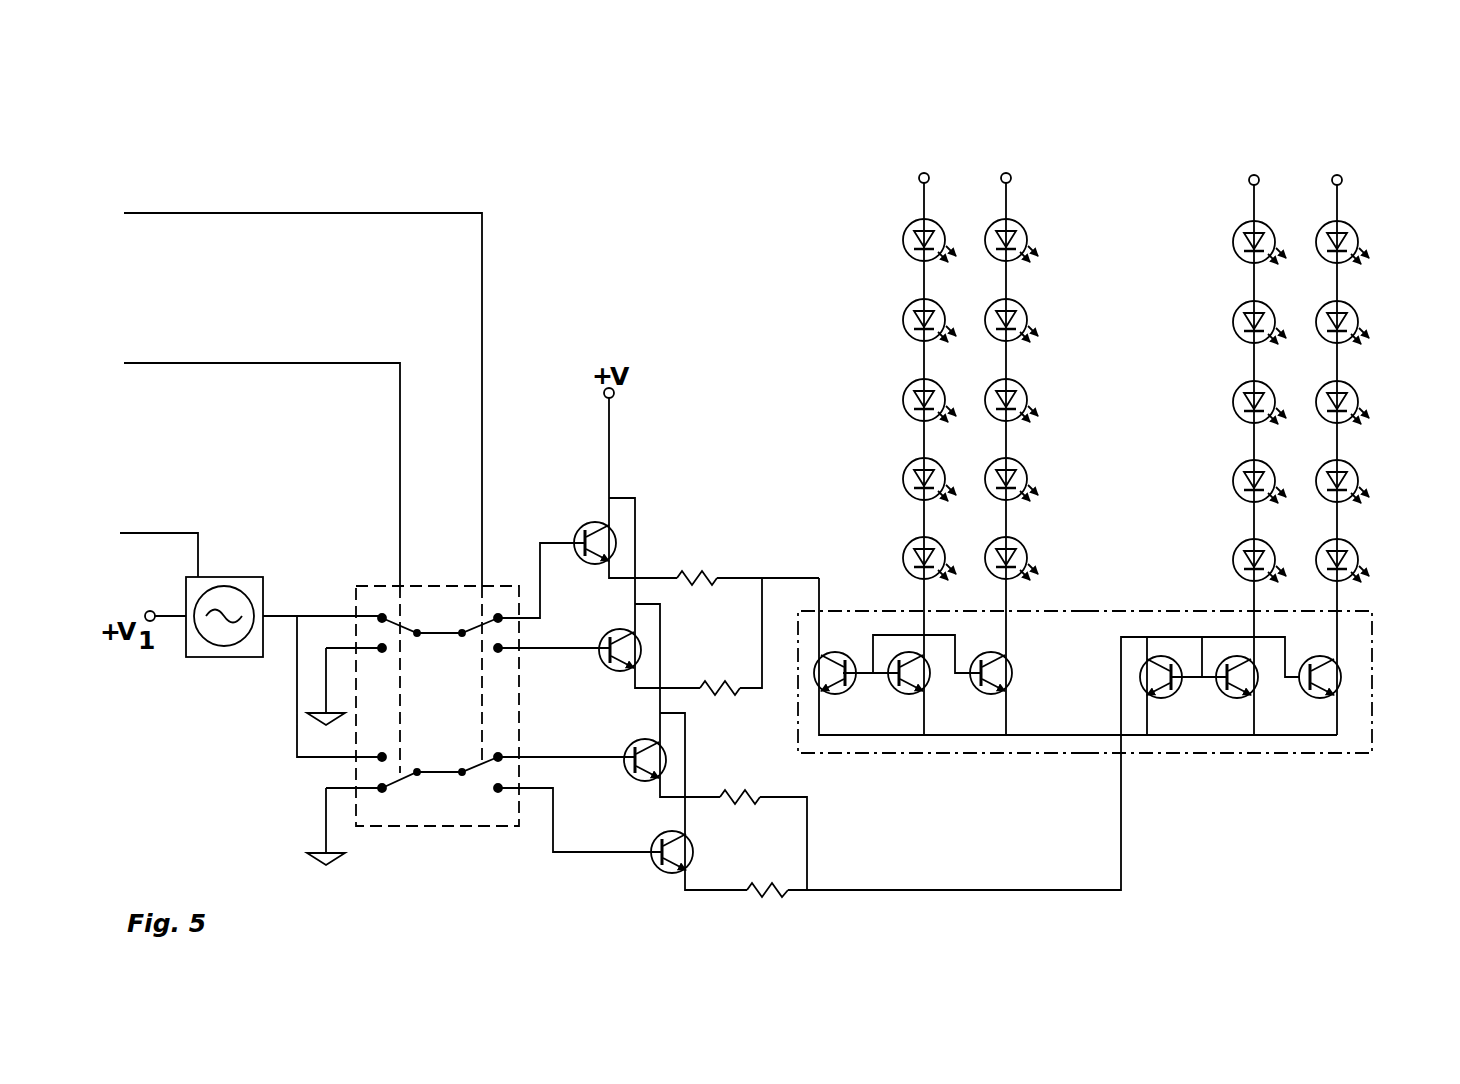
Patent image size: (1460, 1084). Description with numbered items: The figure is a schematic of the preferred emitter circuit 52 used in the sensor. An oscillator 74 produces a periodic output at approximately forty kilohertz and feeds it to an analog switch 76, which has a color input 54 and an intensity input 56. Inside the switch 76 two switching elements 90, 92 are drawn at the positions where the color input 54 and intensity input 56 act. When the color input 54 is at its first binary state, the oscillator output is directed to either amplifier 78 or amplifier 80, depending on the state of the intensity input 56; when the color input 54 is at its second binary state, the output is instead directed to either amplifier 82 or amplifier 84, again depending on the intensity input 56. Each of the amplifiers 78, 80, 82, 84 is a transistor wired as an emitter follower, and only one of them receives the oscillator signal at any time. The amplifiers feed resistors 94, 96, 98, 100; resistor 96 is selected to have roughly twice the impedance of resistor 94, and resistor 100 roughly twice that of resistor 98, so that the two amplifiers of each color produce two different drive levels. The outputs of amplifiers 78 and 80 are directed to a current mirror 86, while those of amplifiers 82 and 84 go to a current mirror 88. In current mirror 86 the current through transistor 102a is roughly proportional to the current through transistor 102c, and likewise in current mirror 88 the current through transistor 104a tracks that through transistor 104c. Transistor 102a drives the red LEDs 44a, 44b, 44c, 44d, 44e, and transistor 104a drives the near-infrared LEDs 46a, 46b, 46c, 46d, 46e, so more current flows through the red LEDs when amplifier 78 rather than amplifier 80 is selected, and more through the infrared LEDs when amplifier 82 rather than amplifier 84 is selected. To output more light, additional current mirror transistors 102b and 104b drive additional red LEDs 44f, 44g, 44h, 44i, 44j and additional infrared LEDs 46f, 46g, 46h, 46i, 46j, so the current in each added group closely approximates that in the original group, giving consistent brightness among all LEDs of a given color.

The emitter circuit 52 is at (1373, 176).
The color input 54 is at (197, 362).
The intensity input 56 is at (186, 212).
The oscillator 74 is at (225, 587).
The analog switch 76 is at (425, 827).
The amplifier 78 is at (584, 526).
The amplifier 80 is at (612, 629).
The amplifier 82 is at (633, 742).
The amplifier 84 is at (668, 874).
The current mirror 86 is at (917, 753).
The current mirror 88 is at (1243, 753).
The first switch 90 is at (398, 585).
The second switch 92 is at (480, 585).
The resistor 94 is at (690, 577).
The resistor 96 is at (722, 684).
The resistor 98 is at (740, 795).
The resistor 100 is at (767, 893).
The transistor 102a is at (928, 688).
The current mirror transistor 102b is at (1012, 685).
The transistor 102c is at (853, 690).
The transistor 104a is at (1258, 690).
The current mirror transistor 104b is at (1340, 690).
The transistor 104c is at (1178, 693).
The LED 44a is at (903, 238).
The LED 44b is at (903, 318).
The LED 44c is at (903, 398).
The LED 44d is at (903, 477).
The LED 44e is at (903, 556).
The LED 44f is at (1028, 238).
The LED 44g is at (1028, 318).
The LED 44h is at (1028, 398).
The LED 44i is at (1028, 477).
The LED 44j is at (1028, 556).
The LED 46a is at (1232, 240).
The LED 46b is at (1232, 320).
The LED 46c is at (1232, 400).
The LED 46d is at (1232, 479).
The LED 46e is at (1232, 558).
The LED 46f is at (1359, 240).
The LED 46g is at (1359, 320).
The LED 46h is at (1359, 400).
The LED 46i is at (1359, 479).
The LED 46j is at (1359, 558).